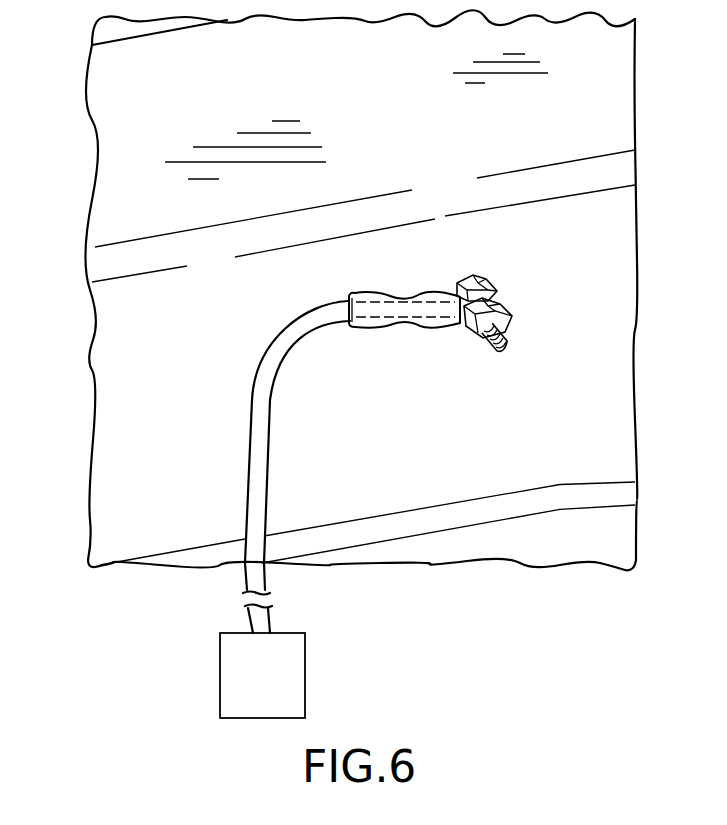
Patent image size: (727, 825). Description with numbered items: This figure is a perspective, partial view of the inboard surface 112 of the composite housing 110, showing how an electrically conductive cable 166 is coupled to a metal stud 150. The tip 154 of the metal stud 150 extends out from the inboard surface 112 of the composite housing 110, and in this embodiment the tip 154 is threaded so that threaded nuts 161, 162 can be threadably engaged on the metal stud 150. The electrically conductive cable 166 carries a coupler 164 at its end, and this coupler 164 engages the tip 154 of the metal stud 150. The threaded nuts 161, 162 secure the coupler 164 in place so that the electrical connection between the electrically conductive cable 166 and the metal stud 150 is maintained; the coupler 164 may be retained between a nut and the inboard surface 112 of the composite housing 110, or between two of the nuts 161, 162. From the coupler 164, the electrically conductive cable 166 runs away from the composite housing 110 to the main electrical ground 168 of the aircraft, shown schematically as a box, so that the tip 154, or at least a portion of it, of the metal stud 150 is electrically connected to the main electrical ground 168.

The composite housing 110 is at (106, 320).
The inboard surface 112 is at (549, 118).
The metal stud 150 is at (497, 339).
The tip 154 is at (472, 348).
The threaded nut 161 is at (487, 283).
The threaded nut 162 is at (507, 312).
The coupler 164 is at (453, 295).
The electrically conductive cable 166 is at (250, 432).
The main electrical ground 168 is at (279, 685).